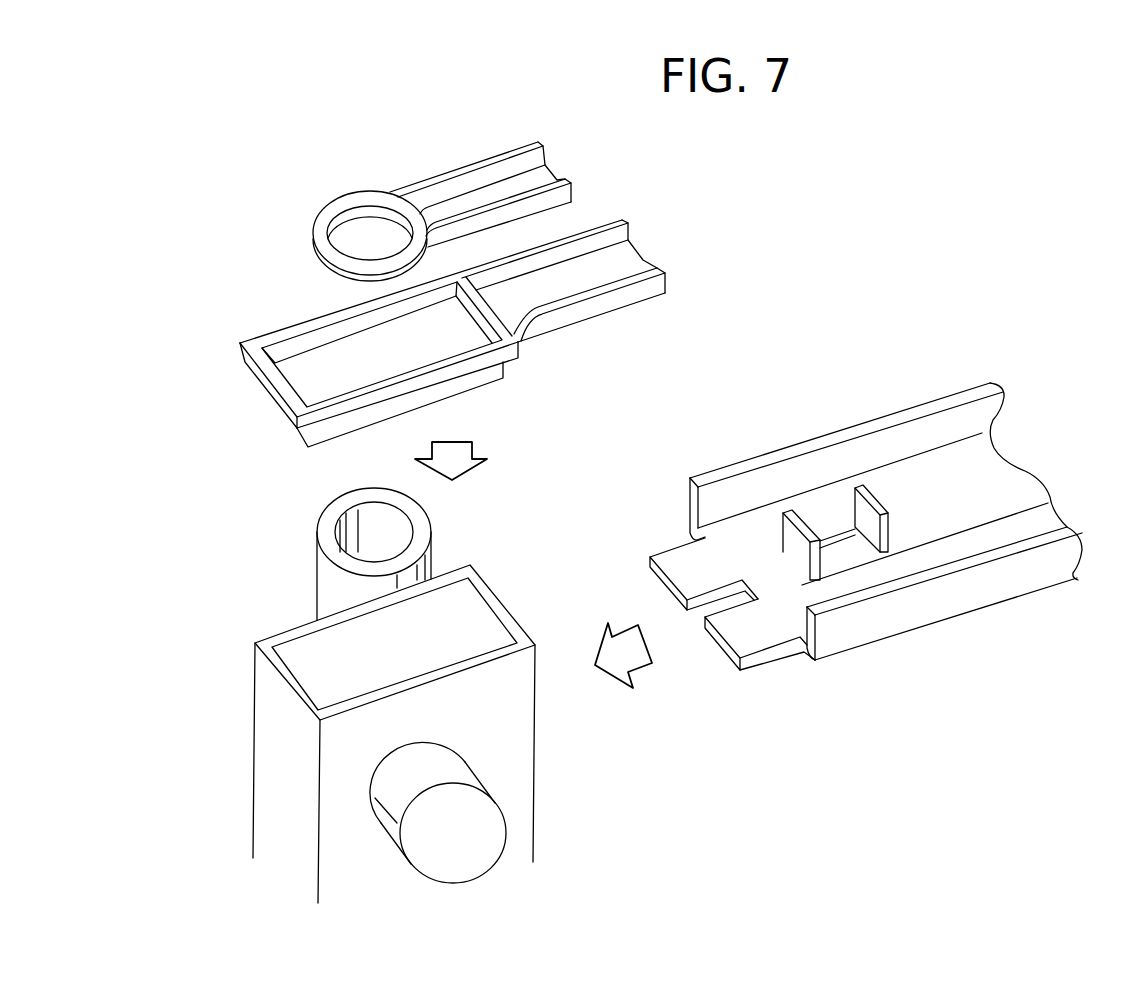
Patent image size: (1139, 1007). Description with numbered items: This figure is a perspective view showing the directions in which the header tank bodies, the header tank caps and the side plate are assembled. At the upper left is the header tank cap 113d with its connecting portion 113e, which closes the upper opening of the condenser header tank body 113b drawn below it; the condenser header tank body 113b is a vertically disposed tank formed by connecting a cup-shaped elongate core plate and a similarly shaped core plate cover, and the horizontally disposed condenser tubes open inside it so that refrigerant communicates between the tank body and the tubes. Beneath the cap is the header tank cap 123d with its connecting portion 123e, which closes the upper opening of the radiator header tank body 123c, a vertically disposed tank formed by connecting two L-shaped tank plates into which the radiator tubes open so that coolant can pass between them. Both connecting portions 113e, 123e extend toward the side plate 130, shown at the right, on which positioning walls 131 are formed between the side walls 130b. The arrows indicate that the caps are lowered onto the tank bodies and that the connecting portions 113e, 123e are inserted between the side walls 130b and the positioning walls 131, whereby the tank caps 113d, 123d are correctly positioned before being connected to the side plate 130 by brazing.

The condenser header tank body 113b is at (432, 518).
The header tank cap 113d is at (327, 203).
The connecting portion 113e is at (434, 176).
The radiator header tank body 123c is at (521, 734).
The header tank cap 123d is at (478, 367).
The connecting portion 123e is at (594, 310).
The side plate 130 is at (880, 526).
The side wall 130b is at (830, 433).
The positioning wall 131 is at (772, 557).